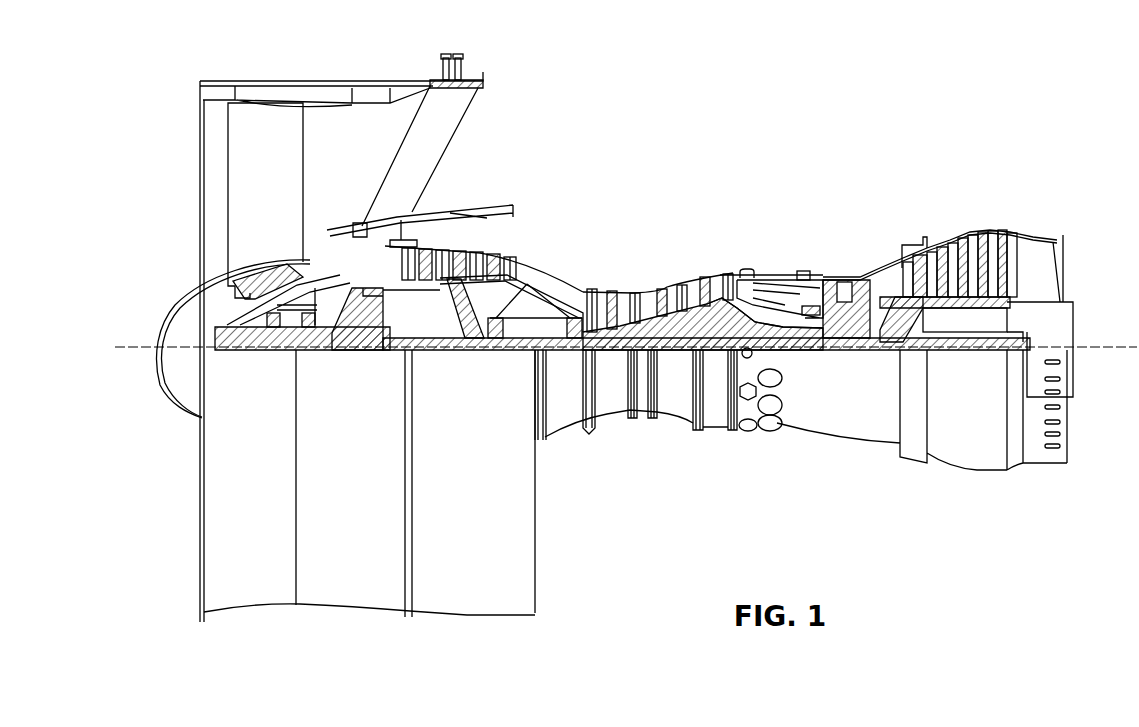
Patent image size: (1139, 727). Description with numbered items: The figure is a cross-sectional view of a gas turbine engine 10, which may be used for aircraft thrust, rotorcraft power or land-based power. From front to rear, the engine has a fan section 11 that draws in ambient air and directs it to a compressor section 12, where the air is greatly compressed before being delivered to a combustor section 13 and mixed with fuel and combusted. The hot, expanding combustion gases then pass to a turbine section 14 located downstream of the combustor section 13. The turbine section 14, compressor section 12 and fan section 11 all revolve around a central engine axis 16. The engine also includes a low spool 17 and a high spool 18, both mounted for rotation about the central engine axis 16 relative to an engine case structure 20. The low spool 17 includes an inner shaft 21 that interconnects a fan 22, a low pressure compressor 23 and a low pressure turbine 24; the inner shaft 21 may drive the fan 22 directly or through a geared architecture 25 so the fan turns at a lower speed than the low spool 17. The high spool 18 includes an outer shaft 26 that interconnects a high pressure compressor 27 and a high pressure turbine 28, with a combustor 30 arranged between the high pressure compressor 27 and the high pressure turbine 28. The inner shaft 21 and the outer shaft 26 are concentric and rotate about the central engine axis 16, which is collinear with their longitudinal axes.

The gas turbine engine 10 is at (814, 114).
The fan section 11 is at (195, 65).
The compressor section 12 is at (413, 182).
The combustor section 13 is at (830, 182).
The turbine section 14 is at (1021, 182).
The central engine axis 16 is at (1098, 343).
The low spool 17 is at (681, 355).
The high spool 18 is at (719, 316).
The engine case structure 20 is at (721, 435).
The inner shaft 21 is at (565, 353).
The fan 22 is at (275, 194).
The low pressure compressor 23 is at (476, 251).
The low pressure turbine 24 is at (960, 243).
The geared architecture 25 is at (371, 333).
The outer shaft 26 is at (779, 334).
The high pressure compressor 27 is at (665, 318).
The high pressure turbine 28 is at (843, 268).
The combustor 30 is at (772, 293).